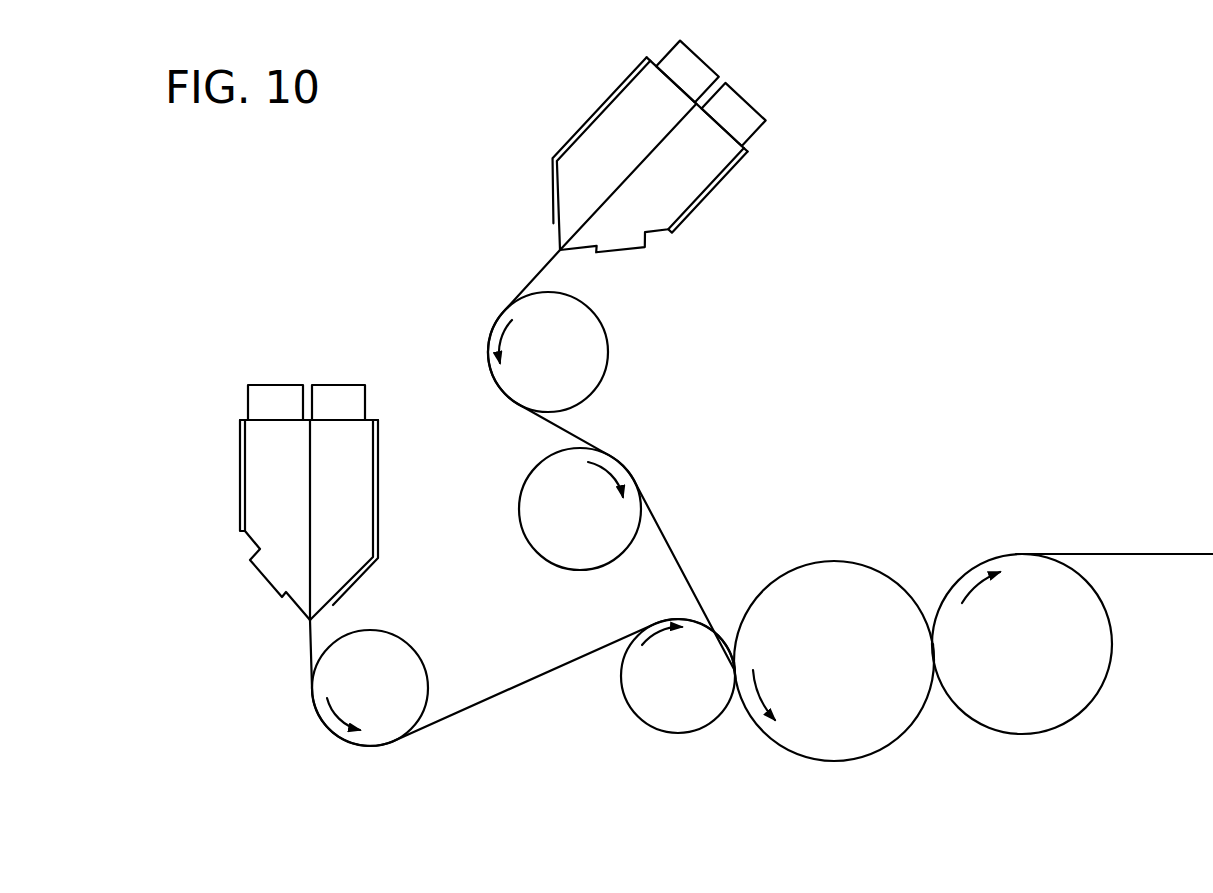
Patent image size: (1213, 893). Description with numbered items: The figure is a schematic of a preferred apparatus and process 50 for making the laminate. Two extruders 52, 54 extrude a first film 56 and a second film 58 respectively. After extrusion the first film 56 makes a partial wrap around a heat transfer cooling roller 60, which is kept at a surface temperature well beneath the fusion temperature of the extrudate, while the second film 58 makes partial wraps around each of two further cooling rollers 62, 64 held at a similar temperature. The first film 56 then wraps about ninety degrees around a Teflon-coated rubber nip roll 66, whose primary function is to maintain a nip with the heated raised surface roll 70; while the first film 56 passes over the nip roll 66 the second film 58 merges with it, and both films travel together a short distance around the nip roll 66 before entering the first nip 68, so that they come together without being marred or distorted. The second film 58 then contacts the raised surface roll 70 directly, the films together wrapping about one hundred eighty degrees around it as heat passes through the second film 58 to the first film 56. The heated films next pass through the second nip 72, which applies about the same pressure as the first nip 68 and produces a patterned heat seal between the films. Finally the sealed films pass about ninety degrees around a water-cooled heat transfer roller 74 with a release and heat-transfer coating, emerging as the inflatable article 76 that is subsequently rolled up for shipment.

The apparatus and process 50 is at (312, 728).
The extruder 52 is at (258, 465).
The extruder 54 is at (608, 125).
The first film 56 is at (310, 638).
The second film 58 is at (540, 268).
The heat transfer (cooling) roller 60 is at (397, 640).
The heat transfer (cooling) roller 62 is at (593, 353).
The heat transfer (cooling) roller 64 is at (530, 482).
The nip roll 66 is at (655, 718).
The first nip 68 is at (735, 655).
The raised surface roll 70 is at (828, 567).
The second nip 72 is at (933, 660).
The heat transfer (cooling) roller 74 is at (1102, 653).
The inflatable article 76 is at (1128, 552).